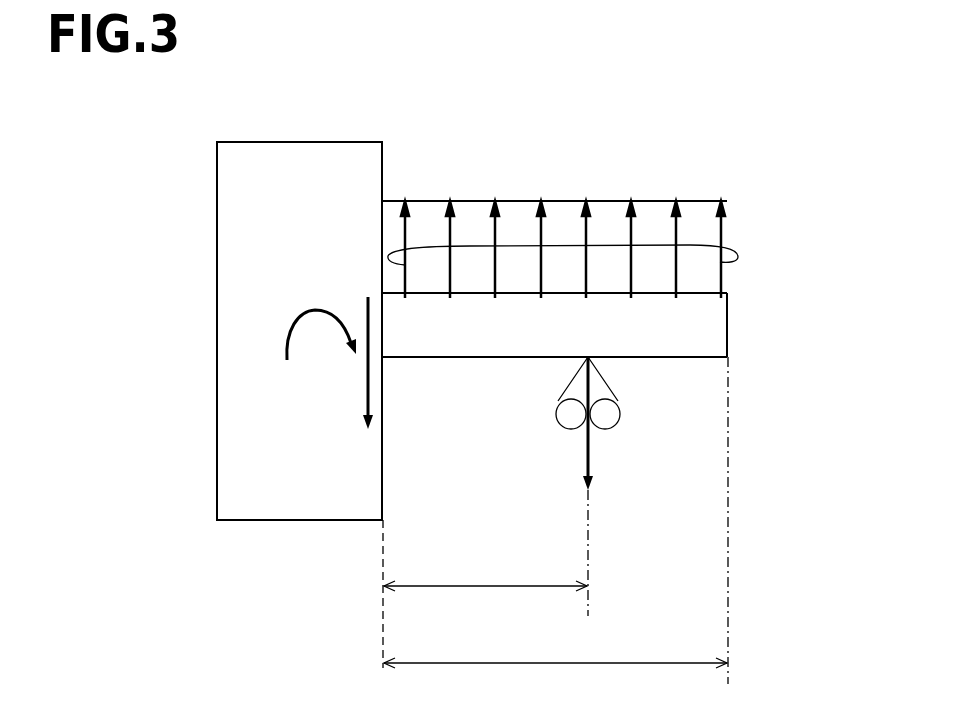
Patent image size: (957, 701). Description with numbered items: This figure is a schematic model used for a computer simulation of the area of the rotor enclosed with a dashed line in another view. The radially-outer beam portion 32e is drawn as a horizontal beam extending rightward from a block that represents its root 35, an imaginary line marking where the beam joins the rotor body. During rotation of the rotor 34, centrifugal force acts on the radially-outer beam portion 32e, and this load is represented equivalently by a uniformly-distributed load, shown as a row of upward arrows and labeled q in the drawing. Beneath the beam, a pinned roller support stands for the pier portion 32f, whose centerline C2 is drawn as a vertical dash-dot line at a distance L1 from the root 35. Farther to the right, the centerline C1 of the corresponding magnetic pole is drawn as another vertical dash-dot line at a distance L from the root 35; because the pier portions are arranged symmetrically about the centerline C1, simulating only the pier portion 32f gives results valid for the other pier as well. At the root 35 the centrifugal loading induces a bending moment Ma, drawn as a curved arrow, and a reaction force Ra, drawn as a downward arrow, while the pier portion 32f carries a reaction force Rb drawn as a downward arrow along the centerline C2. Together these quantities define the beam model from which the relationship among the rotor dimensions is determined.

The root of the radially-outer beam portion 35 is at (382, 326).
The rotor 34 is at (567, 175).
The distributed load q is at (740, 253).
The radially-outer beam portion 32e is at (715, 333).
The pier portion 32f is at (588, 438).
The bending moment Ma is at (302, 313).
The reaction force at the root Ra is at (368, 387).
The reaction force in the pier portion Rb is at (607, 433).
The centerline of the corresponding magnetic pole C1 is at (730, 669).
The centerline of the pier portion C2 is at (591, 599).
The distance between root and pier centerline L1 is at (485, 573).
The distance between root and magnetic pole centerline L is at (555, 652).